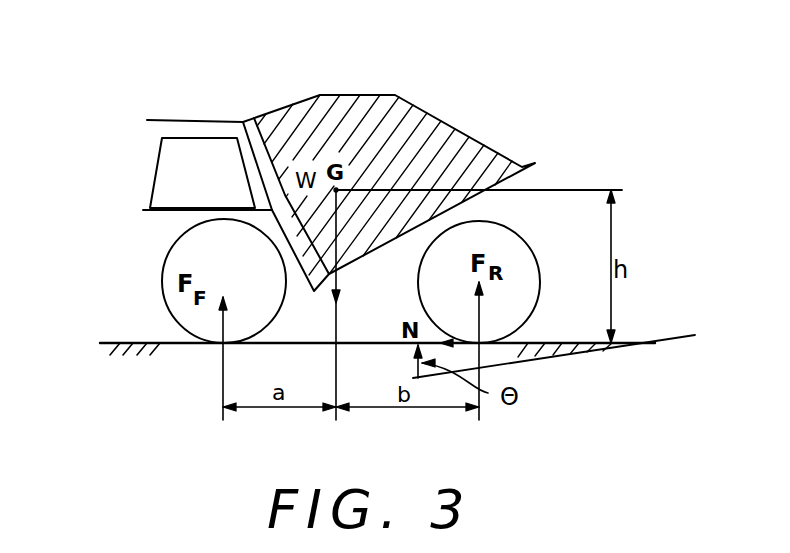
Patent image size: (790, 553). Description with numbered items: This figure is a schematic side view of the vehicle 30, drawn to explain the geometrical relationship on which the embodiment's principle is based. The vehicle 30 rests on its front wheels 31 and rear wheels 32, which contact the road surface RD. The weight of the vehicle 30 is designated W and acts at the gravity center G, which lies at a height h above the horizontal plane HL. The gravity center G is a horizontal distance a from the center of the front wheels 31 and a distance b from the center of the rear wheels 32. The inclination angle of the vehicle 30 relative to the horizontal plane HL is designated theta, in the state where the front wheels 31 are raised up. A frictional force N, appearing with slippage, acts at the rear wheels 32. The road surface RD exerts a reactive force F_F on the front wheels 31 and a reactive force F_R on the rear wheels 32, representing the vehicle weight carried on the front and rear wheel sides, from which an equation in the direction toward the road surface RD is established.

The vehicle 30 is at (513, 129).
The front wheels 31 is at (164, 262).
The rear wheels 32 is at (533, 253).
The road surface RD is at (120, 342).
The horizontal plane HL is at (678, 333).